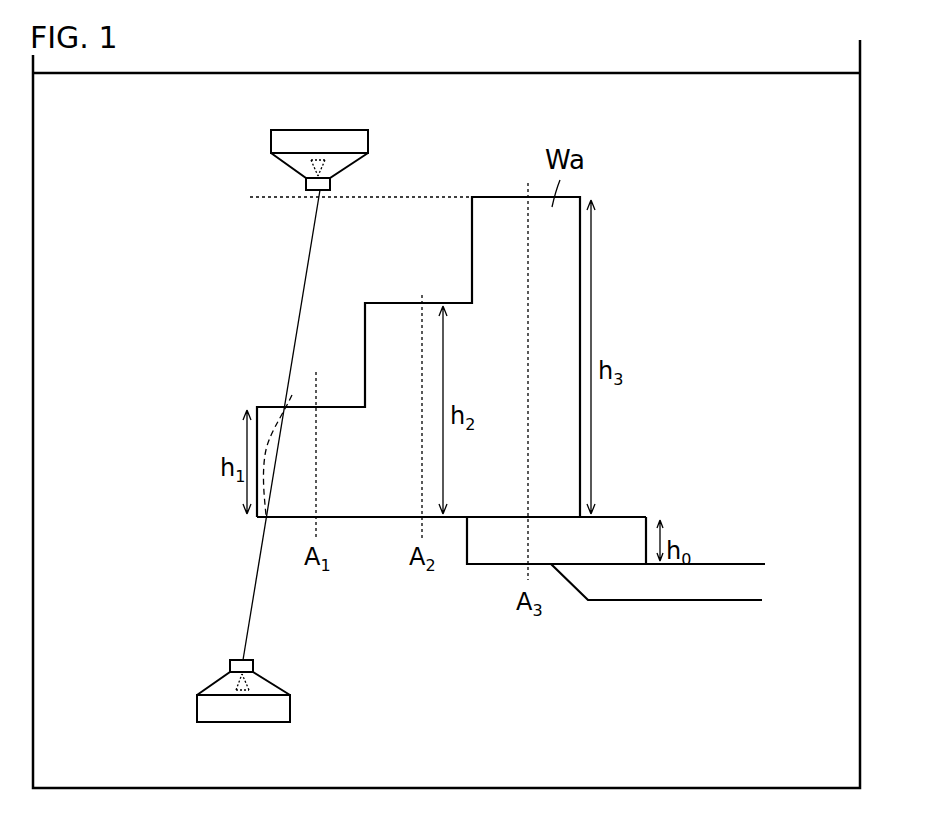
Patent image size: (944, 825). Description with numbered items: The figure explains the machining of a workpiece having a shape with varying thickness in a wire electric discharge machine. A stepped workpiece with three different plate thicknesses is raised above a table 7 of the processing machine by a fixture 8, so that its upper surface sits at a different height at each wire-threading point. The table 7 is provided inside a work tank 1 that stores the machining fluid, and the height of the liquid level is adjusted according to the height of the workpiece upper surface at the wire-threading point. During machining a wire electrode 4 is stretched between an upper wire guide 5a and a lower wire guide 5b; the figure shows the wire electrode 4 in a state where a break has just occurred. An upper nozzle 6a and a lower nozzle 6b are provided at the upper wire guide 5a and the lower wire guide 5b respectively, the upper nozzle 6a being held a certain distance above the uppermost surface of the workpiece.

The work tank 1 is at (860, 280).
The wire electrode 4 is at (250, 605).
The upper wire guide 5a is at (307, 164).
The lower wire guide 5b is at (248, 698).
The upper nozzle 6a is at (335, 178).
The lower nozzle 6b is at (280, 690).
The table 7 is at (628, 590).
The fixture 8 is at (624, 517).